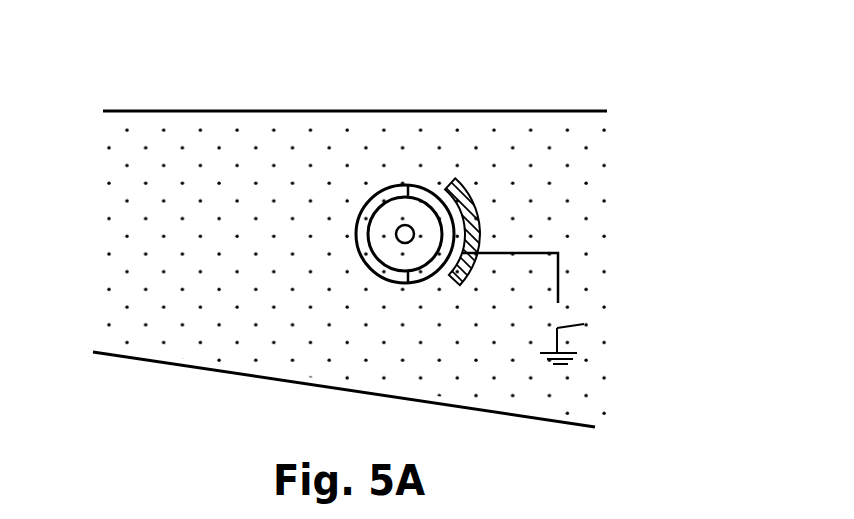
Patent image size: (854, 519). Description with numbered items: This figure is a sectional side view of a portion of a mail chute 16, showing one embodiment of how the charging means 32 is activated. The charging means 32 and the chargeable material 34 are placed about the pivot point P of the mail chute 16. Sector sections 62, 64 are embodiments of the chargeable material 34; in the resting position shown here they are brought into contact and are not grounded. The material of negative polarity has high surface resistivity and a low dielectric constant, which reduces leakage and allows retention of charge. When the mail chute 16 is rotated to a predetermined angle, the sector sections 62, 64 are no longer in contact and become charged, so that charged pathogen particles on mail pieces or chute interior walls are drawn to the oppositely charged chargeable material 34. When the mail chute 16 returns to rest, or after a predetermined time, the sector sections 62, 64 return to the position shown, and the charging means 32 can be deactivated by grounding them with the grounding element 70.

The mail chute 16 is at (226, 101).
The charging means 32 is at (393, 174).
The chargeable material 34 is at (368, 215).
The pivot point P is at (398, 240).
The sector section 64 is at (408, 283).
The sector section 62 is at (495, 234).
The grounding element 70 is at (566, 352).